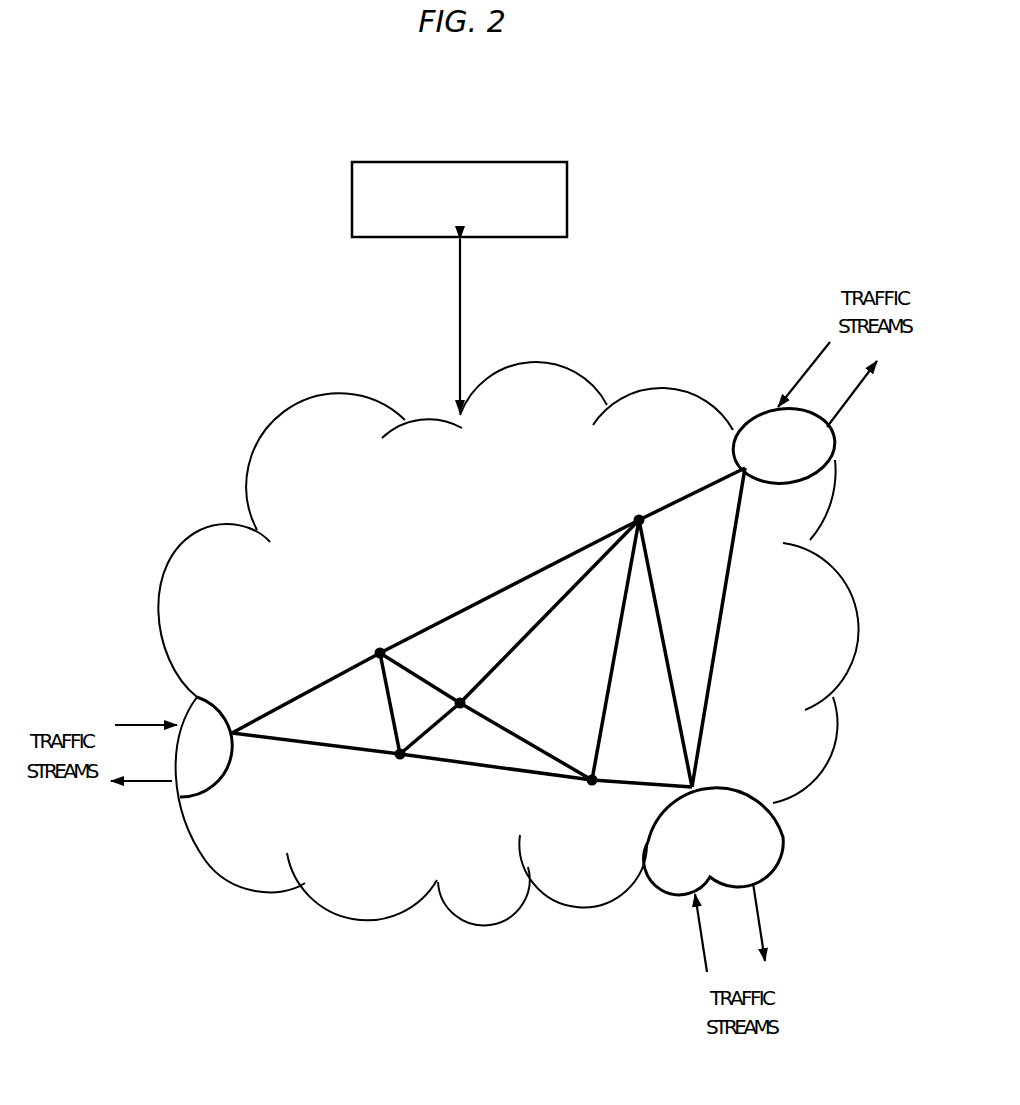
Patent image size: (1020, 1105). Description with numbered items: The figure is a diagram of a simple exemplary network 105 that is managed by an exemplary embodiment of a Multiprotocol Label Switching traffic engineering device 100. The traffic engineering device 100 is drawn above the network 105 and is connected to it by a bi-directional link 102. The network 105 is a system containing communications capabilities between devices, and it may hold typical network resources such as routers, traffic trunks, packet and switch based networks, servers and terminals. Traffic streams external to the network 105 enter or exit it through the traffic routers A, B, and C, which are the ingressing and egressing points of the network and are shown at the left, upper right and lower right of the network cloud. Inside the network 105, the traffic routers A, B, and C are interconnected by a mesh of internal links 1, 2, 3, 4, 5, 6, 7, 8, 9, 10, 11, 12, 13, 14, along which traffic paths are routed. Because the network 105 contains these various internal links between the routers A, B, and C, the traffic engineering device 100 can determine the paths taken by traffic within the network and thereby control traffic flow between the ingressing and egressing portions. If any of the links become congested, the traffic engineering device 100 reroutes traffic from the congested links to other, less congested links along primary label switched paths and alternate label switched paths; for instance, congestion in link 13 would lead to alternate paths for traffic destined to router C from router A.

The link 1 is at (311, 689).
The link 2 is at (507, 585).
The link 3 is at (690, 492).
The link 4 is at (308, 745).
The link 5 is at (486, 771).
The link 6 is at (641, 783).
The link 7 is at (726, 629).
The link 8 is at (659, 595).
The link 9 is at (621, 641).
The link 10 is at (553, 613).
The link 11 is at (430, 681).
The link 12 is at (384, 704).
The link 13 is at (434, 729).
The link 14 is at (524, 736).
The traffic engineering device 100 is at (460, 162).
The bi-directional link 102 is at (461, 301).
The network 105 is at (336, 393).
The traffic router A is at (208, 786).
The traffic router B is at (788, 486).
The traffic router C is at (740, 786).